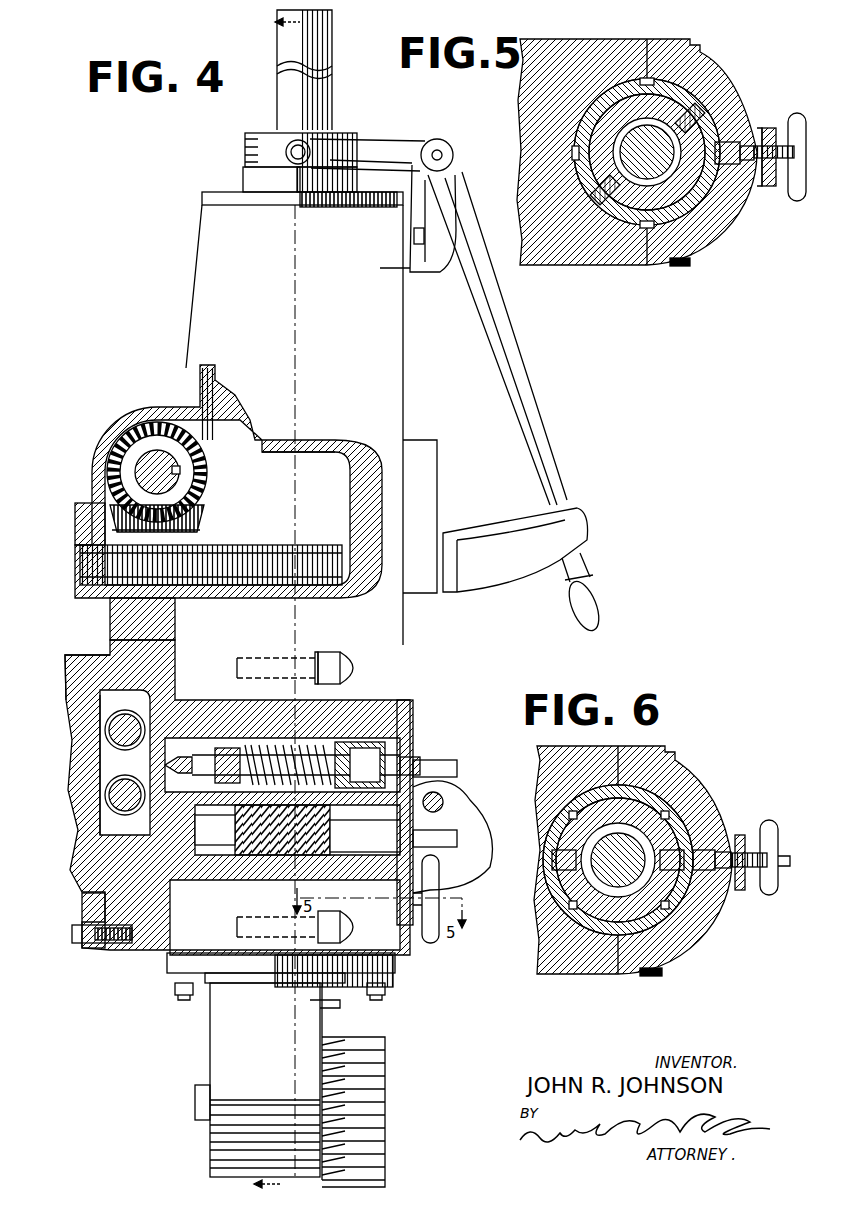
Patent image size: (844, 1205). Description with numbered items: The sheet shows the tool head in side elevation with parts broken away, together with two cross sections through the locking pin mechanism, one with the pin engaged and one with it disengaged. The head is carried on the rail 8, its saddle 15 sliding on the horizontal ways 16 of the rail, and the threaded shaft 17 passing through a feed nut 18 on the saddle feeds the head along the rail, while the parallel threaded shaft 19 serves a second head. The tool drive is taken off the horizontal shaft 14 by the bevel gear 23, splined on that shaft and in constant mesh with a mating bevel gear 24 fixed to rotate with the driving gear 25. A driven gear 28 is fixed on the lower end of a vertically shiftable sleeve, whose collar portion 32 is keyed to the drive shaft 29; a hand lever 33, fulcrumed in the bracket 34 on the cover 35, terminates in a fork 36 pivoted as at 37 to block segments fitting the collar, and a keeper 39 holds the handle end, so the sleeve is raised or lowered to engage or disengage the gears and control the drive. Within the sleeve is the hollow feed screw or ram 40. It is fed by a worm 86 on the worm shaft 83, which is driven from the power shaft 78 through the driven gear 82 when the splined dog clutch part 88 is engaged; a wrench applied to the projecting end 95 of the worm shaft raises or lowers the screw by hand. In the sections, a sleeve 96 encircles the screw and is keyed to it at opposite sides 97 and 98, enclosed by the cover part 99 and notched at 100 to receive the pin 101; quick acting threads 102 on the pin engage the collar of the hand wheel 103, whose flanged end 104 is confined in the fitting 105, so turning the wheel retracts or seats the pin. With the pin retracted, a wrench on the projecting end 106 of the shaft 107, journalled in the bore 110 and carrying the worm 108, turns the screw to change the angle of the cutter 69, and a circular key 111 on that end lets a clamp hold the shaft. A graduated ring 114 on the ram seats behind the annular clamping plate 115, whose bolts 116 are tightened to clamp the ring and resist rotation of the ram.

In FIG. 4, the rail 8 is at (130, 642).
In FIG. 4, the horizontal shaft 14 is at (142, 486).
In FIG. 4, the saddle 15 is at (140, 607).
In FIG. 4, the horizontal ways 16 is at (130, 905).
In FIG. 4, the threaded shaft 17 is at (130, 720).
In FIG. 4, the feed nut 18 is at (120, 695).
In FIG. 4, the parallel threaded shaft 19 is at (125, 797).
In FIG. 4, the bevel gear 23 is at (130, 470).
In FIG. 4, the mating bevel gear 24 is at (95, 517).
In FIG. 4, the driving gear 25 is at (120, 563).
In FIG. 4, the driven gear 28 is at (228, 481).
In FIG. 4, the drive shaft 29 is at (285, 101).
In FIG. 6, the drive shaft 29 is at (541, 960).
In FIG. 4, the collar portion 32 is at (248, 152).
In FIG. 4, the hand lever 33 is at (505, 348).
In FIG. 4, the bracket 34 is at (440, 210).
In FIG. 4, the cover 35 is at (368, 350).
In FIG. 4, the fork 36 is at (374, 147).
In FIG. 4, the pivot 37 is at (250, 159).
In FIG. 4, the keeper 39 is at (556, 536).
In FIG. 5, the hollow feed screw or ram 40 is at (612, 125).
In FIG. 6, the hollow feed screw or ram 40 is at (648, 977).
In FIG. 4, the cutter 69 is at (383, 1056).
In FIG. 4, the power shaft 78 is at (130, 737).
In FIG. 4, the driven gear 82 is at (165, 770).
In FIG. 4, the worm shaft 83 is at (338, 762).
In FIG. 4, the worm 86 is at (297, 745).
In FIG. 4, the mating dog clutch part 88 is at (246, 742).
In FIG. 4, the projecting end of worm shaft 95 is at (455, 768).
In FIG. 5, the sleeve 96 is at (590, 141).
In FIG. 6, the sleeve 96 is at (688, 828).
In FIG. 5, the key 97 is at (692, 126).
In FIG. 6, the key 97 is at (706, 935).
In FIG. 5, the key 98 is at (604, 208).
In FIG. 6, the key 98 is at (552, 850).
In FIG. 5, the cover part 99 is at (718, 102).
In FIG. 6, the cover part 99 is at (690, 955).
In FIG. 5, the notches 100 is at (578, 158).
In FIG. 6, the notches 100 is at (700, 798).
In FIG. 5, the pin 101 is at (735, 150).
In FIG. 6, the pin 101 is at (728, 852).
In FIG. 5, the quick acting threads 102 is at (745, 218).
In FIG. 4, the hand wheel 103 is at (440, 918).
In FIG. 5, the hand wheel 103 is at (798, 126).
In FIG. 6, the hand wheel 103 is at (769, 895).
In FIG. 5, the flanged end 104 is at (765, 205).
In FIG. 6, the flanged end 104 is at (742, 845).
In FIG. 5, the fitting 105 is at (772, 190).
In FIG. 6, the fitting 105 is at (740, 888).
In FIG. 4, the projecting end of shaft 106 is at (452, 843).
In FIG. 4, the shaft 107 is at (393, 836).
In FIG. 4, the worm 108 is at (249, 906).
In FIG. 4, the bore 110 is at (262, 830).
In FIG. 4, the circular key 111 is at (443, 802).
In FIG. 4, the ring 114 is at (228, 975).
In FIG. 4, the annular clamping plate 115 is at (180, 960).
In FIG. 4, the bolts 116 is at (183, 990).